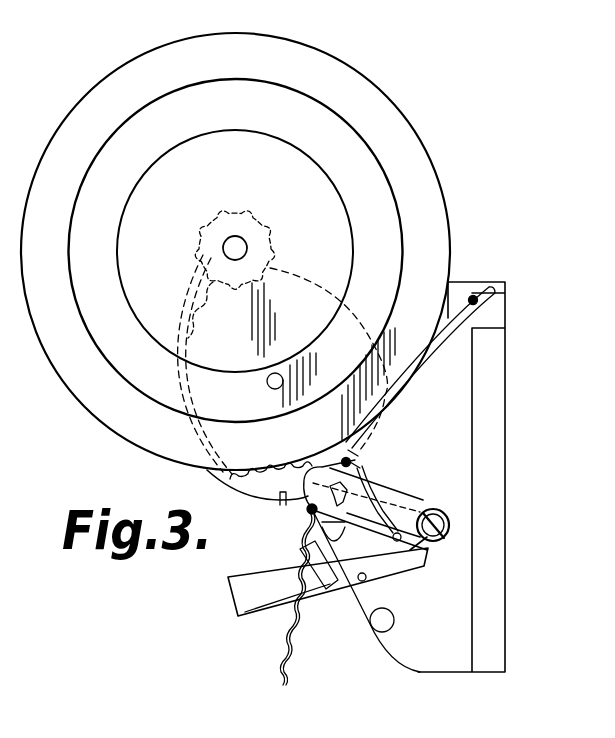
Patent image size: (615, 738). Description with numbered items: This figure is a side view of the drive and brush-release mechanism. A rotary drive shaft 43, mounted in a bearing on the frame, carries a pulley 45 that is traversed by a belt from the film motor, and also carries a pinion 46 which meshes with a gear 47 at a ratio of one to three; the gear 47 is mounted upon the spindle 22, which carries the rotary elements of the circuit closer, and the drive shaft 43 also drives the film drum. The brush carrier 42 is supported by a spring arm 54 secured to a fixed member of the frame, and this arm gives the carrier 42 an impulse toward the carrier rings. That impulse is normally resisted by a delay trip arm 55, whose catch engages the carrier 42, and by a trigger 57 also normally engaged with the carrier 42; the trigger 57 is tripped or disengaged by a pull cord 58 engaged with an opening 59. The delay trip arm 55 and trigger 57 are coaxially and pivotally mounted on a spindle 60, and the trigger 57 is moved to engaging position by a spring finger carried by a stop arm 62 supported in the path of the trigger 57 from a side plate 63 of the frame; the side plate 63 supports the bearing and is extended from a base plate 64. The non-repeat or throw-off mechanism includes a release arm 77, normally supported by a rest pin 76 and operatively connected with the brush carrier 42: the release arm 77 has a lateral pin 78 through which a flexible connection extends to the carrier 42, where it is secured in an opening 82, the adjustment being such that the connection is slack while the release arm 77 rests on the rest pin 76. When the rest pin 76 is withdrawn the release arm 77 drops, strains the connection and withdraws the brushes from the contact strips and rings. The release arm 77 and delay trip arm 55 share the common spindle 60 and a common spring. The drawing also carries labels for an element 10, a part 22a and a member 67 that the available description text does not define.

The arm 10 is at (380, 490).
The spindle 22 is at (266, 381).
The tape end 22a is at (358, 455).
The carrier 42 is at (361, 466).
The rotary drive shaft 43 is at (248, 248).
The pulley 45 is at (363, 88).
The pinion 46 is at (279, 342).
The gear 47 is at (288, 470).
The spring arm 54 is at (438, 347).
The delay trip arm 55 is at (283, 508).
The trigger 57 is at (395, 502).
The pull cord 58 is at (296, 655).
The opening 59 is at (309, 513).
The spindle 60 is at (438, 541).
The stop arm 62 is at (338, 538).
The side plate 63 is at (427, 658).
The base plate 64 is at (497, 607).
The pawl 67 is at (338, 494).
The rest pin 76 is at (367, 580).
The release arm 77 is at (340, 586).
The lateral pin 78 is at (400, 543).
The opening 82 is at (329, 454).